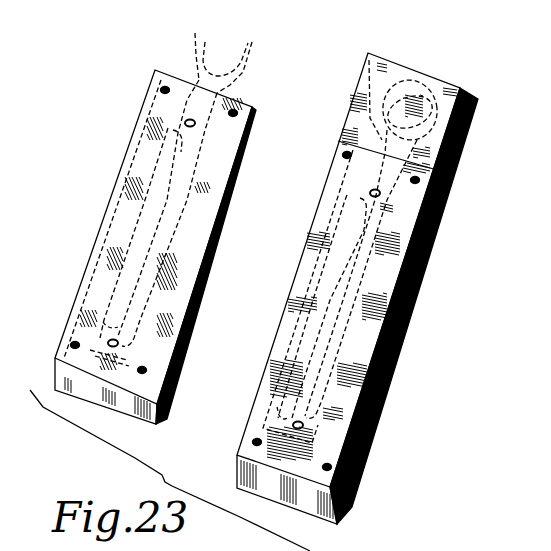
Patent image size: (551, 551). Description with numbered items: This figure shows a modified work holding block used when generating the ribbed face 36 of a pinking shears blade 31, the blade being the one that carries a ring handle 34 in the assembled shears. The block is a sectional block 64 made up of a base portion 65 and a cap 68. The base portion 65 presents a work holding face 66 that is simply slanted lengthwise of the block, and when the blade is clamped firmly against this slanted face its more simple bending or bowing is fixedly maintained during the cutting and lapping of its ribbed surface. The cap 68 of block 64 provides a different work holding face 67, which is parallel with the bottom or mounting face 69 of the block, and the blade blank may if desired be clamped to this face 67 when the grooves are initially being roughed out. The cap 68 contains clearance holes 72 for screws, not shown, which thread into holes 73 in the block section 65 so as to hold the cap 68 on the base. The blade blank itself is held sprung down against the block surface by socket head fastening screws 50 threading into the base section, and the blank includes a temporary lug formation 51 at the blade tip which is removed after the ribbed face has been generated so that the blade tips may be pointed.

The blade 31 is at (149, 219).
The ring handle 34 is at (208, 50).
The ribbed face 36 is at (166, 232).
The socket head fastening screw 50 is at (188, 122).
The temporary lug formation 51 is at (103, 321).
The sectional block 64 is at (347, 120).
The base portion 65 is at (437, 240).
The work holding face 66 is at (368, 343).
The work holding face 67 is at (187, 257).
The cap 68 is at (95, 242).
The mounting face 69 is at (350, 503).
The clearance hole 72 is at (165, 88).
The hole 73 is at (347, 156).